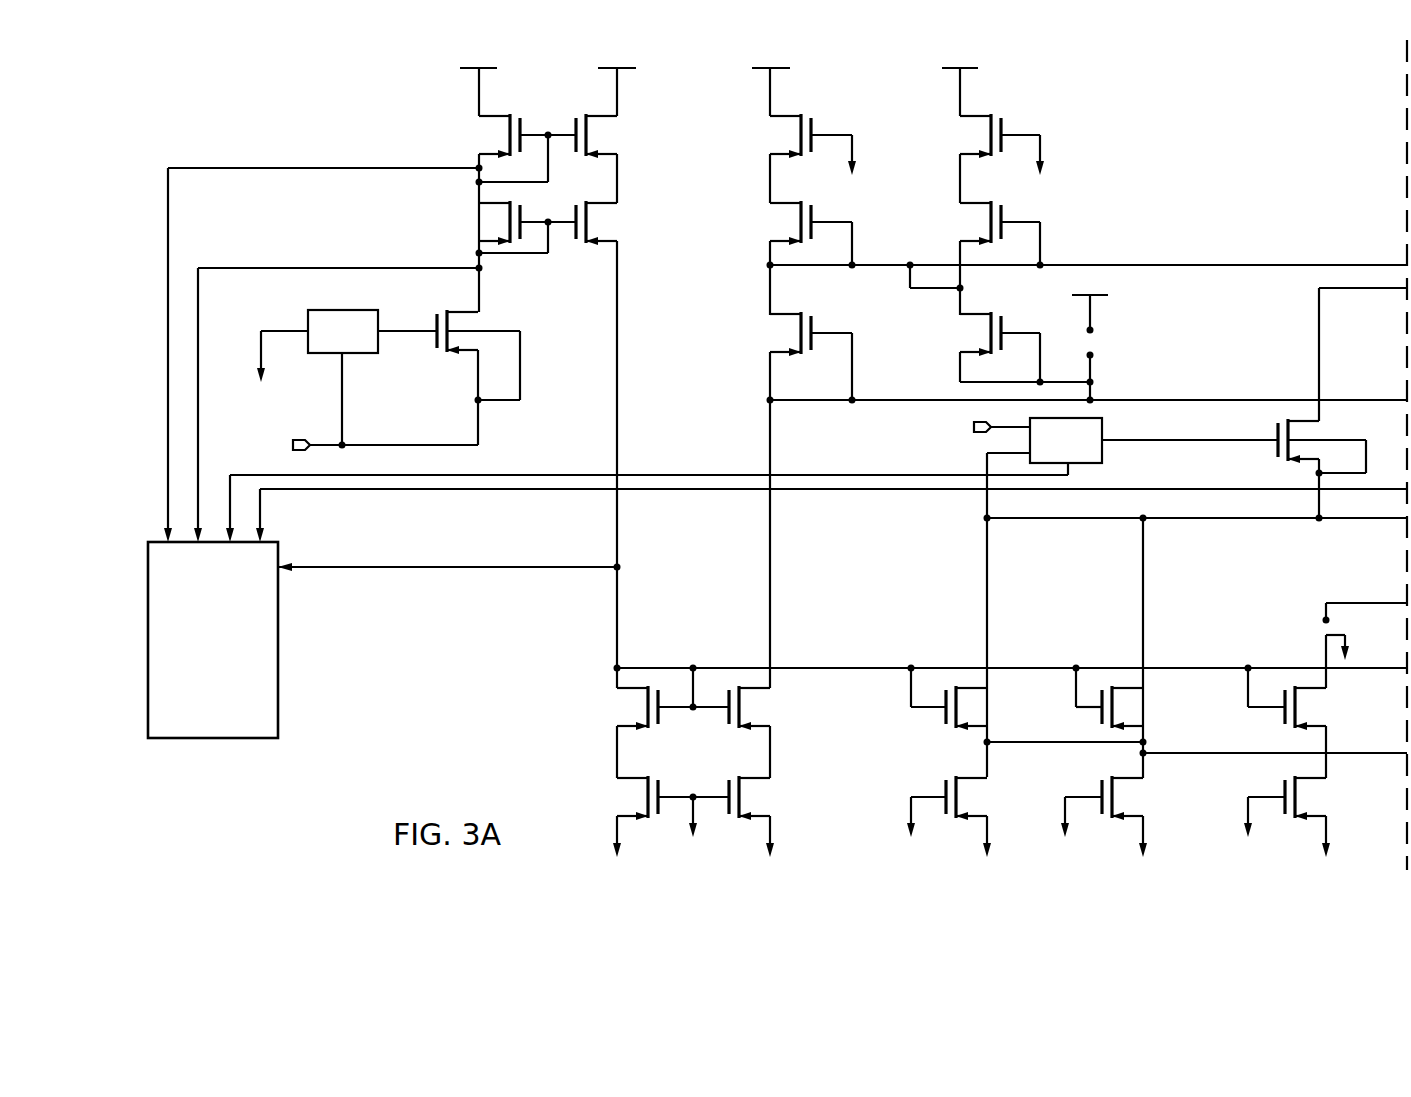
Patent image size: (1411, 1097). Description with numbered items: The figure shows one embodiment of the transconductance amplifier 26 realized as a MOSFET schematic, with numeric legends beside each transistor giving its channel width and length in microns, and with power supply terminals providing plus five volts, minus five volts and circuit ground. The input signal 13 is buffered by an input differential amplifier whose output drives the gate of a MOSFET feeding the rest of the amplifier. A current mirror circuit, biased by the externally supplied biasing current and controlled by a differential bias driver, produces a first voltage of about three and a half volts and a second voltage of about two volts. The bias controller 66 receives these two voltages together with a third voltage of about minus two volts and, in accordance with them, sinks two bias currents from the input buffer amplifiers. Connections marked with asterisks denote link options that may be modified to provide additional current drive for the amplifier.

The transconductance amplifier 26 is at (777, 455).
The bias controller 66 is at (278, 603).
The input signal 13 is at (990, 432).